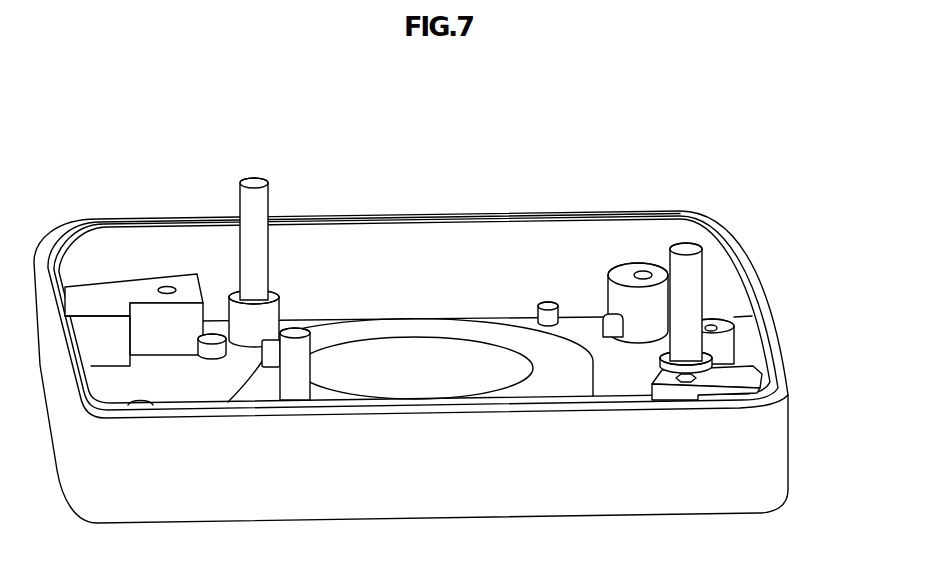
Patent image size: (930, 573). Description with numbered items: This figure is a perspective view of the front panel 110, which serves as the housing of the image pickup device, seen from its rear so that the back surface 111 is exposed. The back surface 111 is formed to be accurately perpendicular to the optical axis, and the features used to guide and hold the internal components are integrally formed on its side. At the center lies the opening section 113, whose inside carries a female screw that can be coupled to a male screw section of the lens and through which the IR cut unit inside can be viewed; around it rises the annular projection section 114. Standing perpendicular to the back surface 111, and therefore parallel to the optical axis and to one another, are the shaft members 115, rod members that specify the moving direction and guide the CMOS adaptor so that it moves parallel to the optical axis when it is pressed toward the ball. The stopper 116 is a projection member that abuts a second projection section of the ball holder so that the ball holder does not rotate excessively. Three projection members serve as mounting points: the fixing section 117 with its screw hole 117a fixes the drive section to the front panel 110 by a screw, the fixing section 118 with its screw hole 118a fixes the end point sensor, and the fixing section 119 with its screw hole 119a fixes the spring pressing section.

The front panel 110 is at (549, 167).
The back surface 111 is at (177, 382).
The opening section 113 is at (474, 358).
The annular projection section 114 is at (400, 328).
The shaft member 115 is at (295, 329).
The stopper 116 is at (212, 336).
The fixing section 117 is at (740, 379).
The screw hole 117a is at (695, 378).
The fixing section 118 is at (622, 266).
The screw hole 118a is at (643, 271).
The fixing section 119 is at (122, 283).
The screw hole 119a is at (166, 286).